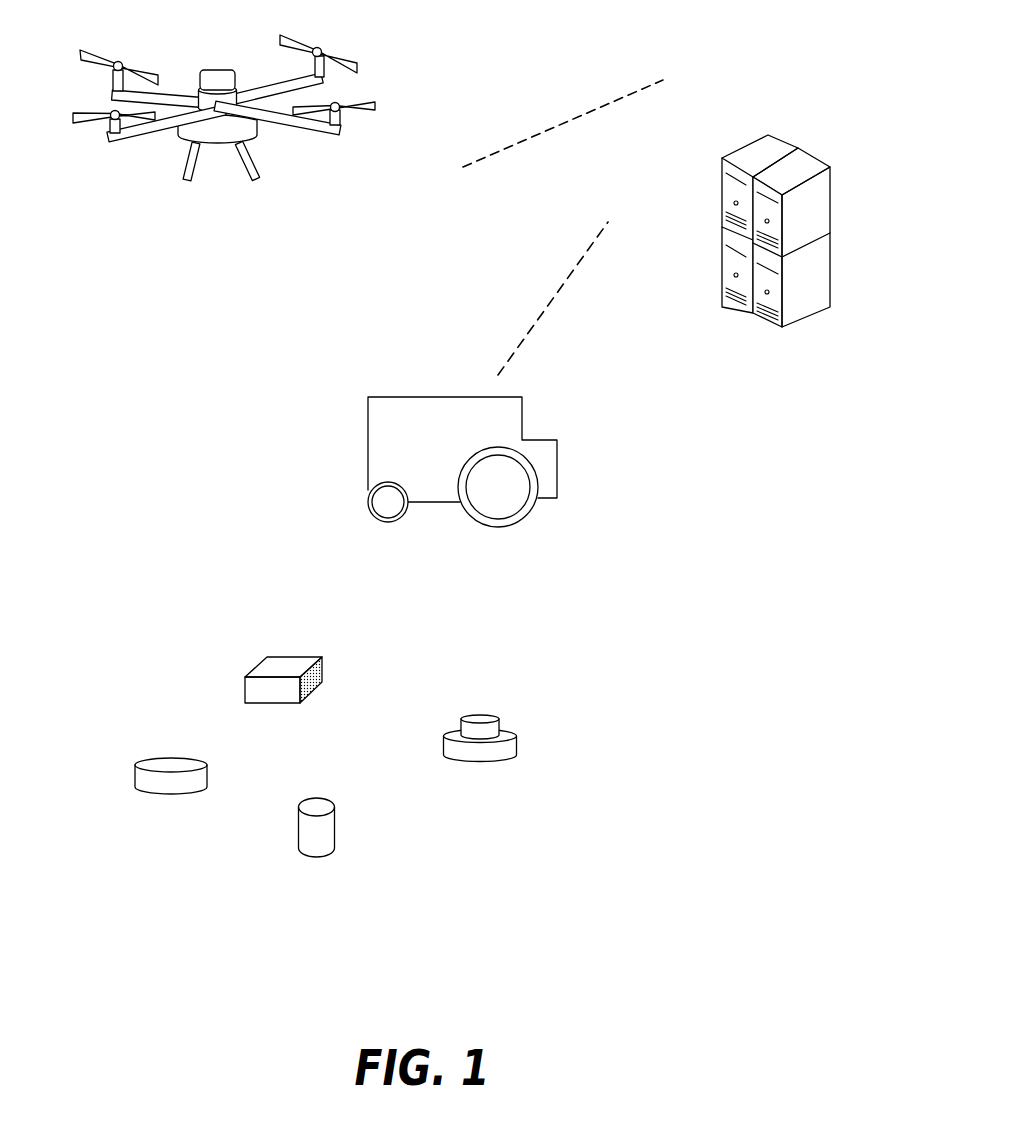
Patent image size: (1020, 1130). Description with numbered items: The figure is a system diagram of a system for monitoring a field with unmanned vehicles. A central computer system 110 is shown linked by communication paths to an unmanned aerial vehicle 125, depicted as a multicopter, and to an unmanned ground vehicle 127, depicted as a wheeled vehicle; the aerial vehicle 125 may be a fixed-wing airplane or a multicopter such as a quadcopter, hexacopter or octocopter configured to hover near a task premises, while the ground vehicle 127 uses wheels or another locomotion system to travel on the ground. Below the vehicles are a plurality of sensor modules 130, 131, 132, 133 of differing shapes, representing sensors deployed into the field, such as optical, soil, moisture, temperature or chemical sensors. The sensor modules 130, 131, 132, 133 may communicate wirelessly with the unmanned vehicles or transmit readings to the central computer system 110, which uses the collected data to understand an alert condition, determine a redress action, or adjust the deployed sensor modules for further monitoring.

The unmanned aerial vehicle 125 is at (215, 75).
The central computer system 110 is at (770, 185).
The unmanned ground vehicle 127 is at (462, 481).
The sensor module 130 is at (158, 816).
The sensor module 131 is at (324, 859).
The sensor module 132 is at (477, 776).
The sensor module 133 is at (292, 712).